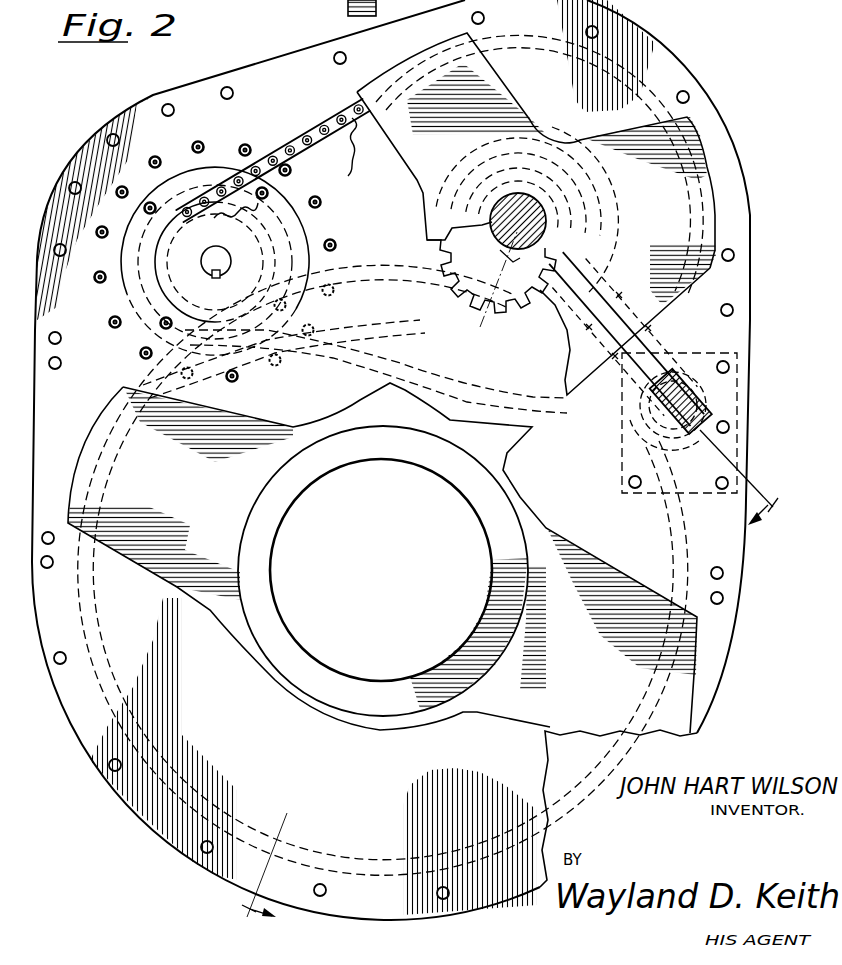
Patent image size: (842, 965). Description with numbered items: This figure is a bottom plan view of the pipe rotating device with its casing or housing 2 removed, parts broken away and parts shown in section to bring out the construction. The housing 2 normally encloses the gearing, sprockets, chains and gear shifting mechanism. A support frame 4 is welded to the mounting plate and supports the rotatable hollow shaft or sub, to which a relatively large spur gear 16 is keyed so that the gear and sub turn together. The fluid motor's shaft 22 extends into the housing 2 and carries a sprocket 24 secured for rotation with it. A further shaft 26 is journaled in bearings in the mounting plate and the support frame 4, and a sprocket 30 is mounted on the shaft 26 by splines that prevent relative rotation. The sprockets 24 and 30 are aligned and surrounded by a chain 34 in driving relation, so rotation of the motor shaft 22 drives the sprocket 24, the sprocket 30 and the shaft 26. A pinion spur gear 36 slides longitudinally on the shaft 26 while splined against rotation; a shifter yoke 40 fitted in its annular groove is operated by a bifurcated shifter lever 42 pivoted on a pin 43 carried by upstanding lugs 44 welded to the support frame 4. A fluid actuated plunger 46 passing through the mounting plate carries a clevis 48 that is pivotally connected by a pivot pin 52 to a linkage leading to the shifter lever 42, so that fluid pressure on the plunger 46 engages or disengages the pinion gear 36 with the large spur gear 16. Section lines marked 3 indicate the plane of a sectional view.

The casing or housing 2 is at (744, 149).
The section line 3- 3 is at (504, 673).
The support frame 4 is at (510, 105).
The large spur gear 16 is at (403, 265).
The shaft 22 is at (233, 247).
The sprocket 24 is at (277, 176).
The shaft 26 is at (548, 233).
The sprocket 30 is at (397, 177).
The chain 34 is at (307, 120).
The pinion spur gear 36 is at (460, 300).
The shifter yoke 40 is at (498, 285).
The bifurcated shifter lever 42 is at (603, 280).
The pin 43 is at (567, 374).
The upstanding lugs 44 is at (676, 317).
The fluid actuated plunger 46 is at (662, 418).
The clevis 48 is at (712, 401).
The pivot pin 52 is at (697, 382).